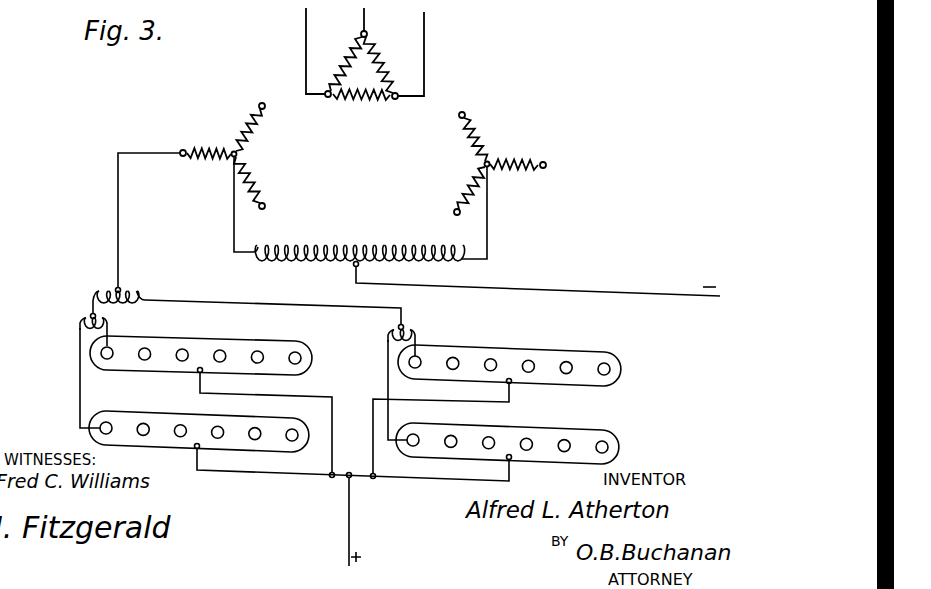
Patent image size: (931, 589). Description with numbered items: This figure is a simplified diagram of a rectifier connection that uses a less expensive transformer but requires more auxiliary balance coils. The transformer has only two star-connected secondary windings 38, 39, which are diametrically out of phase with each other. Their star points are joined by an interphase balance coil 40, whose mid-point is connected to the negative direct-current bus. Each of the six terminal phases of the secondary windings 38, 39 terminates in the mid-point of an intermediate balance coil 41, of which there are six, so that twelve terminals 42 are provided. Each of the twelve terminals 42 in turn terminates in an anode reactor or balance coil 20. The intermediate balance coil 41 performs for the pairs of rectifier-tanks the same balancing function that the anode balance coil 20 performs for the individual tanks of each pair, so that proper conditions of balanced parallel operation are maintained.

The star-connected transformer secondary winding 38 is at (233, 149).
The star-connected transformer secondary winding 39 is at (491, 161).
The interphase balance coil 40 is at (357, 250).
The intermediate balance coil 41 is at (99, 293).
The terminal 42 is at (91, 306).
The anode reactor or balance coil 20 is at (84, 331).